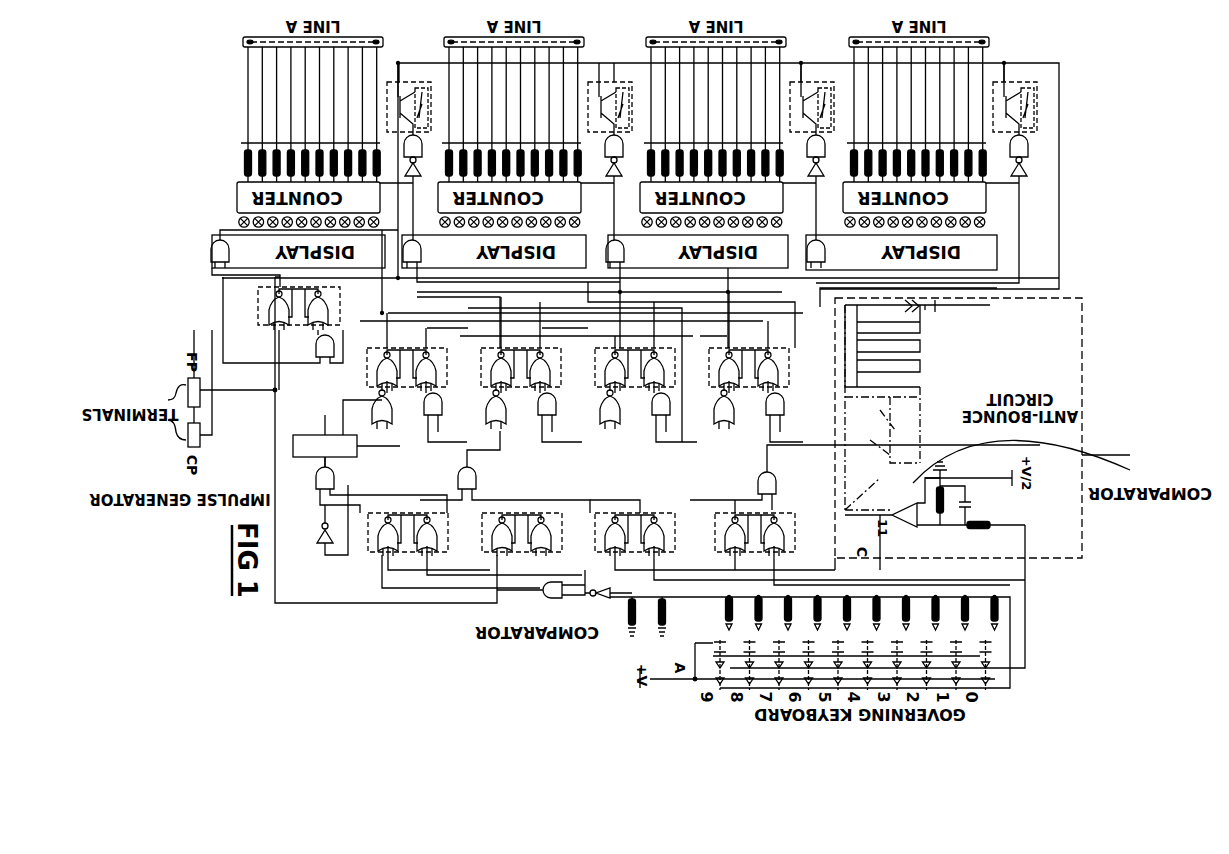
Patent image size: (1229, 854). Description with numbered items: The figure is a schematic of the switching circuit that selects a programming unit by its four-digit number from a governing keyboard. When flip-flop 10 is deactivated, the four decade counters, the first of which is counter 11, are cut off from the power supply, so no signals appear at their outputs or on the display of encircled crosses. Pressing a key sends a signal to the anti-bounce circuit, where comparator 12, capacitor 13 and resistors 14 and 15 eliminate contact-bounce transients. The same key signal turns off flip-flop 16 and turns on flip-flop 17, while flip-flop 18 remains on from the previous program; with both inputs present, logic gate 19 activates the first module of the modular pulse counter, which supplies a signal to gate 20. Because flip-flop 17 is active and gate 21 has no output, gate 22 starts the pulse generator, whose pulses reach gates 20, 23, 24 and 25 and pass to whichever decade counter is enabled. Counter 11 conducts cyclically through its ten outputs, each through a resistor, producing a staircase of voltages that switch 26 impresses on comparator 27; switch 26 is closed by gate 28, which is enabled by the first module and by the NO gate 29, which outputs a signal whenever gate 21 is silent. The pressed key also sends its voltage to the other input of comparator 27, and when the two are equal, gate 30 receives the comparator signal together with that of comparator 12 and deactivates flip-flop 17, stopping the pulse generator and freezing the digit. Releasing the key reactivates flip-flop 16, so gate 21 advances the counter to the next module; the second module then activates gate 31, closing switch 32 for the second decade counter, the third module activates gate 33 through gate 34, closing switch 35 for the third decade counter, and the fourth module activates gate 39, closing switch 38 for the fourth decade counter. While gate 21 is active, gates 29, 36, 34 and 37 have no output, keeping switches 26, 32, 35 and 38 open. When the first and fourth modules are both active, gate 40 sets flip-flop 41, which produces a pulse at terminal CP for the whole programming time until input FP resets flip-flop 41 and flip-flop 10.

The flip-flop 10 is at (470, 528).
The decade counter 11 is at (613, 122).
The comparator 12 is at (910, 543).
The capacitor 13 is at (976, 504).
The resistor 14 is at (992, 544).
The resistor 15 is at (950, 530).
The flip-flop 16 is at (712, 538).
The flip-flop 17 is at (364, 536).
The flip-flop 18 is at (590, 502).
The Y logic gate 19 is at (758, 480).
The Y logic gate 20 is at (834, 250).
The Y logic gate 21 is at (448, 476).
The Y logic gate 22 is at (306, 476).
The Y logic gate 23 is at (633, 250).
The Y logic gate 24 is at (430, 250).
The Y logic gate 25 is at (238, 250).
The switch 26 is at (1042, 102).
The comparator 27 is at (598, 612).
The gate 28 is at (1039, 152).
The NO logic gate 29 is at (1038, 180).
The gate 30 is at (549, 612).
The gate 31 is at (797, 155).
The switch 32 is at (840, 88).
The gate 33 is at (596, 155).
The gate 34 is at (630, 172).
The switch 35 is at (638, 90).
The gate 36 is at (832, 172).
The gate 37 is at (434, 152).
The switch 38 is at (435, 84).
The gate 39 is at (396, 165).
The gate 40 is at (306, 344).
The flip-flop 41 is at (252, 296).